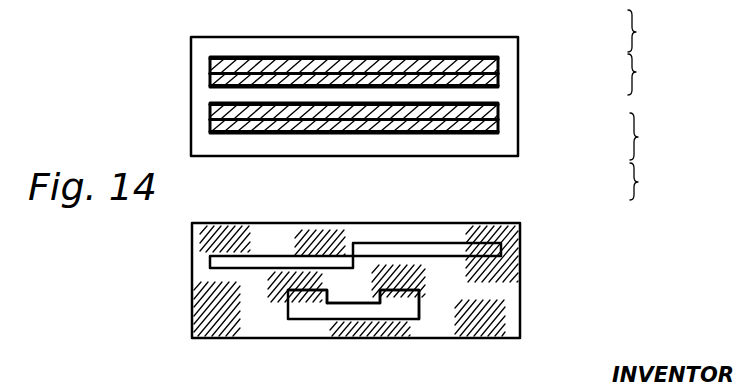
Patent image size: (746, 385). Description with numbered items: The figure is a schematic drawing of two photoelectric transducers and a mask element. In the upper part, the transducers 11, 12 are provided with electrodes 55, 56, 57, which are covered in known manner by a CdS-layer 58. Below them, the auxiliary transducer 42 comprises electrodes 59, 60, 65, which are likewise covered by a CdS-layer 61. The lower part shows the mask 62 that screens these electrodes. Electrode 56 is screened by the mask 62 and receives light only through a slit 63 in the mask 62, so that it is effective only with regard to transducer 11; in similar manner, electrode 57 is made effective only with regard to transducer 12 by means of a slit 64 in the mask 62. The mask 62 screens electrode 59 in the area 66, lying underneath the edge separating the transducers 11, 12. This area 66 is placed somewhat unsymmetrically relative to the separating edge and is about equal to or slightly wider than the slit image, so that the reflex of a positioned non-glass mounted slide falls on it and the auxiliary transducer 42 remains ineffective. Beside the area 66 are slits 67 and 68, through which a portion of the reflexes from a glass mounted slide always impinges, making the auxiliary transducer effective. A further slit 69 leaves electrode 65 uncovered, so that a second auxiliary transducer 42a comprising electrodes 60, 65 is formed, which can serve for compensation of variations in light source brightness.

The transducer 11 is at (647, 31).
The transducer 12 is at (649, 74).
The auxiliary transducer 42 is at (651, 136).
The second auxiliary transducer 42a is at (660, 181).
The electrode 55 is at (498, 73).
The electrode 56 is at (498, 60).
The electrode 57 is at (498, 86).
The CdS-layer 58 is at (210, 74).
The electrode 59 is at (498, 107).
The electrode 60 is at (498, 120).
The CdS-layer 61 is at (210, 120).
The mask 62 is at (505, 283).
The slit 63 is at (432, 250).
The slit 64 is at (281, 262).
The electrode 65 is at (498, 134).
The area 66 is at (347, 288).
The slit 67 is at (304, 297).
The slit 68 is at (395, 297).
The slit 69 is at (367, 305).